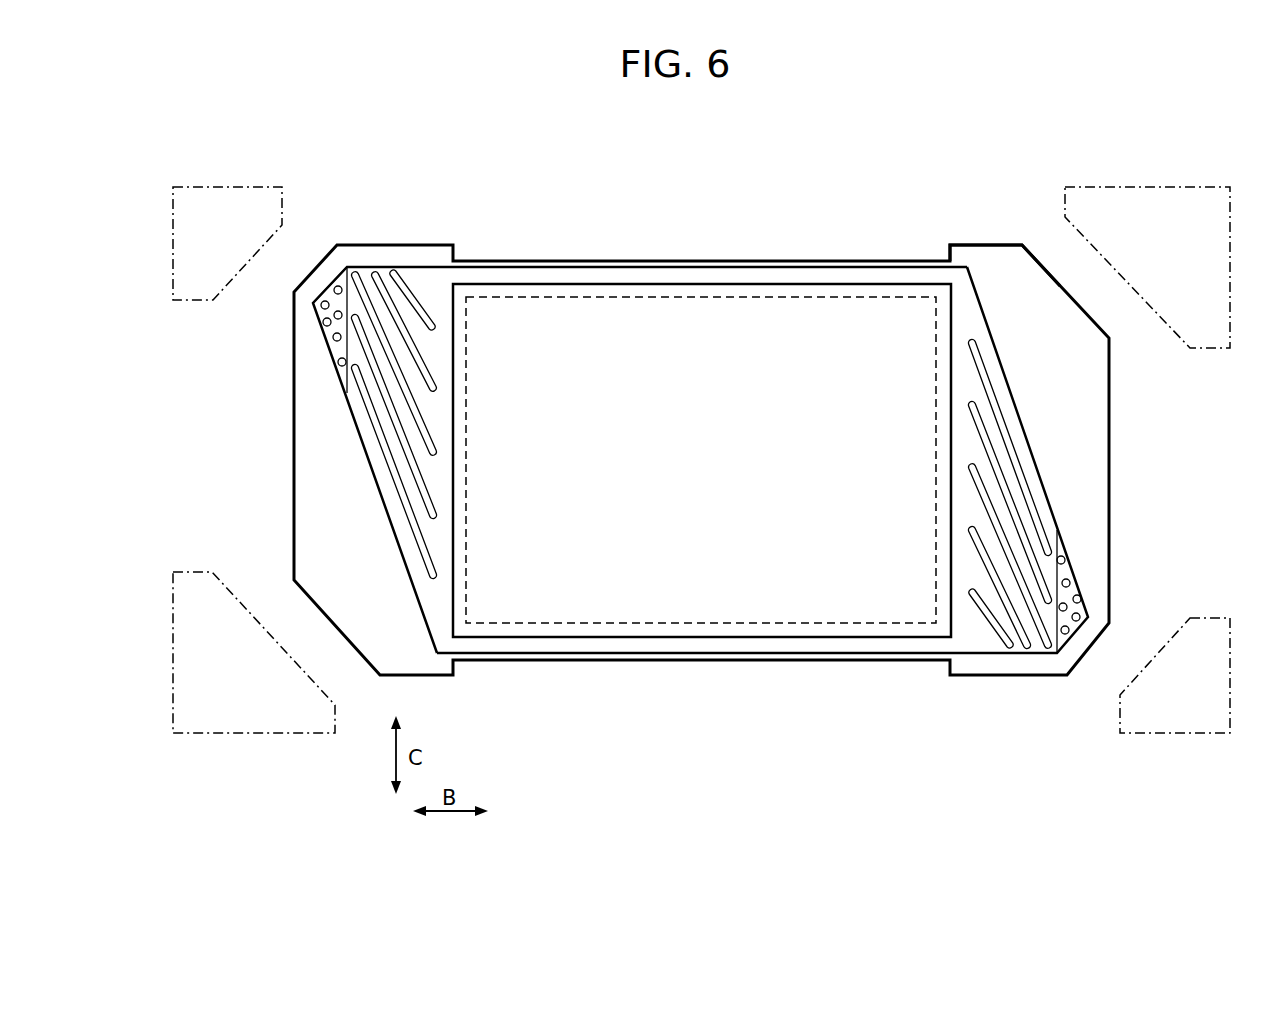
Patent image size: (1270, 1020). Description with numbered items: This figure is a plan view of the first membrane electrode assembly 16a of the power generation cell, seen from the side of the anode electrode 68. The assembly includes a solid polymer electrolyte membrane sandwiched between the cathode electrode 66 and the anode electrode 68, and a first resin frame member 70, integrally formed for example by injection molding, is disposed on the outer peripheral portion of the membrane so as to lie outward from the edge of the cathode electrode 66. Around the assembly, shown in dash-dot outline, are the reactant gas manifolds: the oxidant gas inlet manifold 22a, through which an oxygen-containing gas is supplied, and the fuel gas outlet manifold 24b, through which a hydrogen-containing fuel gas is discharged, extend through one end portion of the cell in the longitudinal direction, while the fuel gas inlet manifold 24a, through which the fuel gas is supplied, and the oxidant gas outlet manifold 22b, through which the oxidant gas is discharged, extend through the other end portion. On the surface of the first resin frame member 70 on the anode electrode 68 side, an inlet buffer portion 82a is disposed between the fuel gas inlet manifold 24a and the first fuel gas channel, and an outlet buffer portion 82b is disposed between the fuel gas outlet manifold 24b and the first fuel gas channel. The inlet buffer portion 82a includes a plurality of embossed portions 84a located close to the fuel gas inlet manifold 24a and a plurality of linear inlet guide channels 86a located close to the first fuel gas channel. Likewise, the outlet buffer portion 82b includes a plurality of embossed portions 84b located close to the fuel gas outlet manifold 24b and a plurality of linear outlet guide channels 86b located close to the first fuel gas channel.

The first membrane electrode assembly 16a is at (458, 142).
The first resin frame member 70 is at (967, 243).
The inlet buffer portion 82a is at (387, 258).
The outlet buffer portion 82b is at (1017, 658).
The anode electrode 68 is at (574, 318).
The cathode electrode 66 is at (627, 350).
The embossed portions 84a is at (333, 337).
The embossed portions 84b is at (1070, 583).
The linear inlet guide channels 86a is at (417, 440).
The linear outlet guide channels 86b is at (987, 479).
The fuel gas inlet manifold 24a is at (217, 208).
The oxidant gas inlet manifold 22a is at (1142, 205).
The oxidant gas outlet manifold 22b is at (233, 710).
The fuel gas outlet manifold 24b is at (1167, 712).